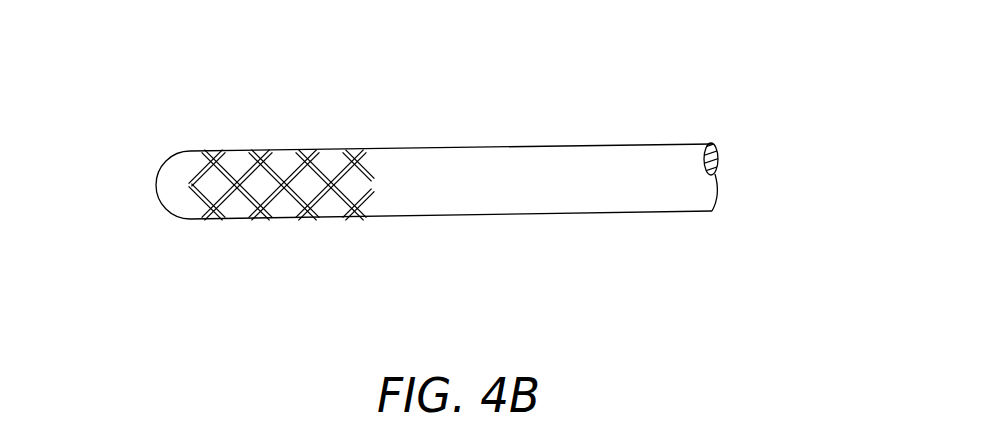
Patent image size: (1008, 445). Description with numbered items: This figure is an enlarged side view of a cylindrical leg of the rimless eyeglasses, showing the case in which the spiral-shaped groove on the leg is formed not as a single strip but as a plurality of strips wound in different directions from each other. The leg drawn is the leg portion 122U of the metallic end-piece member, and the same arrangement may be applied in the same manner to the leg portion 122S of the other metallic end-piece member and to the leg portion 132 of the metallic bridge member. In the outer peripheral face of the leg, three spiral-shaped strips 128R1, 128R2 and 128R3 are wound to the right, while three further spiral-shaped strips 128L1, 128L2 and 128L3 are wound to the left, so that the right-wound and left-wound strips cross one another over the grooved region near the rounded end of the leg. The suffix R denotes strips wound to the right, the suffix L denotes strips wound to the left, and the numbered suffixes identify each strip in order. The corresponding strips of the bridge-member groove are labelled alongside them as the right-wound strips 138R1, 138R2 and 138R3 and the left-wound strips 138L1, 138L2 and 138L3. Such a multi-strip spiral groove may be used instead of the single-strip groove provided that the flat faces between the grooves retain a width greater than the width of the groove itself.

The leg portion 122U is at (451, 138).
The leg portion 122S is at (451, 138).
The leg portion 132 is at (627, 148).
The spiral-shaped strip wound to the right 128R1 is at (312, 141).
The spiral-shaped strip wound to the right 138R1 is at (212, 150).
The spiral-shaped strip wound to the right 128R2 is at (264, 116).
The spiral-shaped strip wound to the right 138R2 is at (268, 150).
The spiral-shaped strip wound to the right 128R3 is at (336, 141).
The spiral-shaped strip wound to the right 138R3 is at (308, 150).
The spiral-shaped strip wound to the left 128L1 is at (336, 270).
The spiral-shaped strip wound to the left 138L1 is at (210, 222).
The spiral-shaped strip wound to the left 128L2 is at (260, 236).
The spiral-shaped strip wound to the left 138L2 is at (282, 222).
The spiral-shaped strip wound to the left 128L3 is at (403, 231).
The spiral-shaped strip wound to the left 138L3 is at (337, 222).